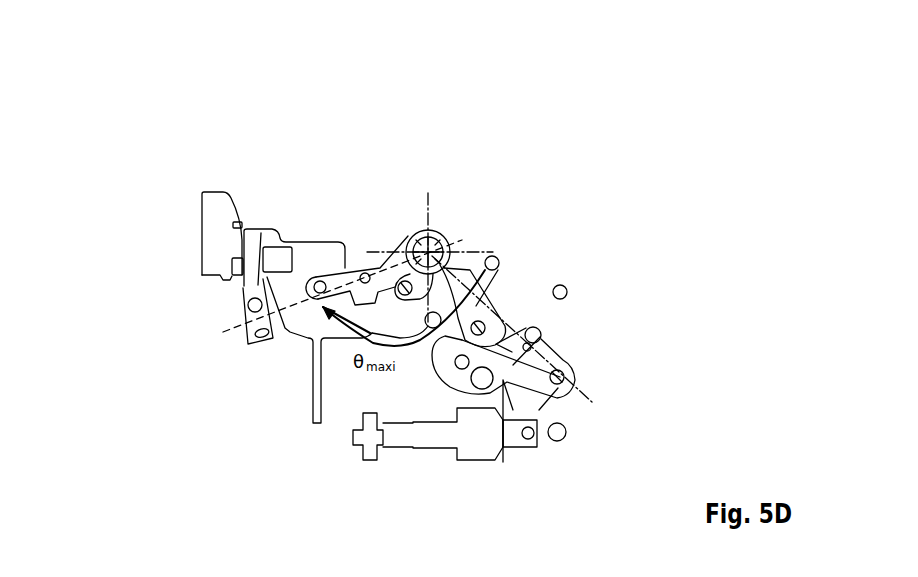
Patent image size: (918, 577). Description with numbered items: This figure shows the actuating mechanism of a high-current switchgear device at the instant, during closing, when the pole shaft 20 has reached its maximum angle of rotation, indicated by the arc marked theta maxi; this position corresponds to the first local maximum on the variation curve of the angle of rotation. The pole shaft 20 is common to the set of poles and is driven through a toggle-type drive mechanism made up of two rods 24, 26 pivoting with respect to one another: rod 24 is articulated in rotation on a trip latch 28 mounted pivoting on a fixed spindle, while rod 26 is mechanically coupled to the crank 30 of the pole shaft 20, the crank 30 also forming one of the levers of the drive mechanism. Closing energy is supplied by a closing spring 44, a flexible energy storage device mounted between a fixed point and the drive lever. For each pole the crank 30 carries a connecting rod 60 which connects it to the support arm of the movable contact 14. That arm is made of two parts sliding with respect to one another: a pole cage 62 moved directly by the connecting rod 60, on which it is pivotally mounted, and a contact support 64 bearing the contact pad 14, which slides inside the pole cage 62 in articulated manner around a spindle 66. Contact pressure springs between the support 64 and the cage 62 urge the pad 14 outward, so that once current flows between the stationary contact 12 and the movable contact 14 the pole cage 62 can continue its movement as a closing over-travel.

The stationary contact 12 is at (232, 266).
The movable contact 14 is at (236, 222).
The pole shaft 20 is at (433, 240).
The rod 24 is at (537, 336).
The rod 26 is at (480, 240).
The trip latch 28 is at (503, 460).
The crank 30 is at (256, 333).
The closing spring 44 is at (440, 433).
The connecting rod 60 is at (355, 268).
The pole cage 62 is at (313, 268).
The contact support 64 is at (250, 288).
The spindle 66 is at (250, 307).